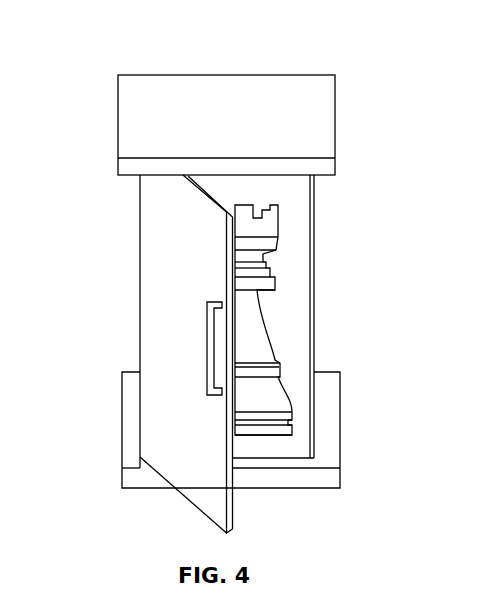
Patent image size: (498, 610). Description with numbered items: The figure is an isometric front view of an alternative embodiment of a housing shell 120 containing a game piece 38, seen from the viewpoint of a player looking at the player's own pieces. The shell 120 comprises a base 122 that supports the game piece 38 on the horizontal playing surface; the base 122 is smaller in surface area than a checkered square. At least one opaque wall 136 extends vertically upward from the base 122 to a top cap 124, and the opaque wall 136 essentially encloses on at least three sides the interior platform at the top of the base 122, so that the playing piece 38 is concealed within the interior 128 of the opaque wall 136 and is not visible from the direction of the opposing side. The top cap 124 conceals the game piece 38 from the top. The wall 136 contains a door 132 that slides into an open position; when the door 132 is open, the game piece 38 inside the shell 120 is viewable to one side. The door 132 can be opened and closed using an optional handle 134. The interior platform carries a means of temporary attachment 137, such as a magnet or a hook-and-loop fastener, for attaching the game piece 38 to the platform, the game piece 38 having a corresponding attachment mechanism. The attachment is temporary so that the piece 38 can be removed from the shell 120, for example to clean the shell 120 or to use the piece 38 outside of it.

The shell 120 is at (95, 219).
The top cap 124 is at (233, 88).
The door 132 is at (149, 318).
The opaque wall 136 is at (313, 224).
The base 122 is at (327, 450).
The interior 128 is at (297, 288).
The handle 134 is at (207, 361).
The game piece 38 is at (247, 307).
The means of temporary attachment 137 is at (285, 424).